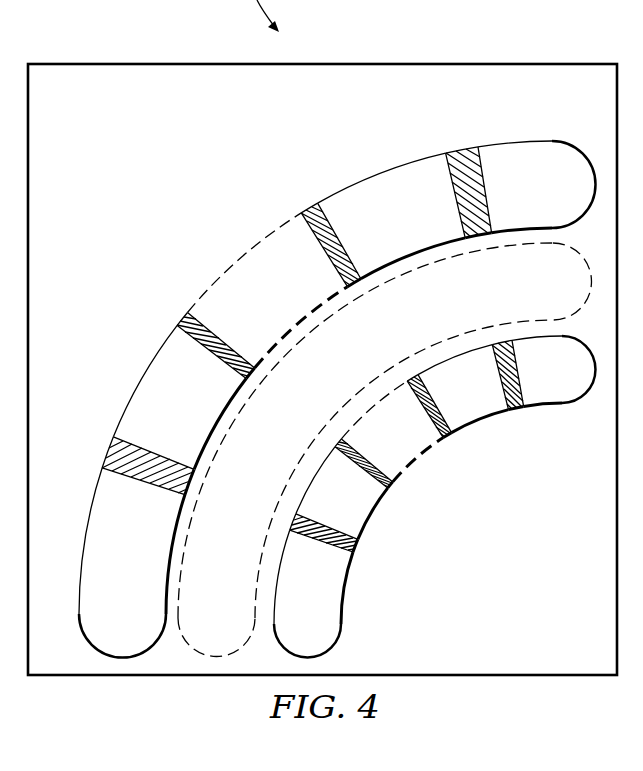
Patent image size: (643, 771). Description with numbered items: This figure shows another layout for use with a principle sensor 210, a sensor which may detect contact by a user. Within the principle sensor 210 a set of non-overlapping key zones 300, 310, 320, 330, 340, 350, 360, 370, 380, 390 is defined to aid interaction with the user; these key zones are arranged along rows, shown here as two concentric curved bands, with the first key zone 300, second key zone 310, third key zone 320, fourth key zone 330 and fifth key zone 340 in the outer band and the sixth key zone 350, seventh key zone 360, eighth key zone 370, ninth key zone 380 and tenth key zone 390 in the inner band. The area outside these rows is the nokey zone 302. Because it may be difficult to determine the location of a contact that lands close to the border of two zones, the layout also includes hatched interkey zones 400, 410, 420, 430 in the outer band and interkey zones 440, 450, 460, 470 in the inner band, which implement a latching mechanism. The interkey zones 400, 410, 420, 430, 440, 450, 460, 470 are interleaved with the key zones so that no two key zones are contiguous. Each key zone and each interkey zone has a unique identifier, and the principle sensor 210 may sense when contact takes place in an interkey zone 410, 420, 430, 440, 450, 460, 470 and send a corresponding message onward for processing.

The principle sensor 210 is at (168, 58).
The nokey zone 302 is at (466, 72).
The key zone 300 is at (103, 576).
The key zone 310 is at (158, 411).
The key zone 320 is at (249, 302).
The key zone 330 is at (374, 225).
The key zone 340 is at (517, 195).
The key zone 350 is at (287, 607).
The key zone 360 is at (320, 506).
The key zone 370 is at (376, 442).
The key zone 380 is at (449, 398).
The key zone 390 is at (534, 380).
The interkey zone 400 is at (106, 452).
The interkey zone 410 is at (182, 314).
The interkey zone 420 is at (309, 209).
The interkey zone 430 is at (456, 151).
The interkey zone 440 is at (356, 552).
The interkey zone 450 is at (391, 486).
The interkey zone 460 is at (447, 438).
The interkey zone 470 is at (514, 409).